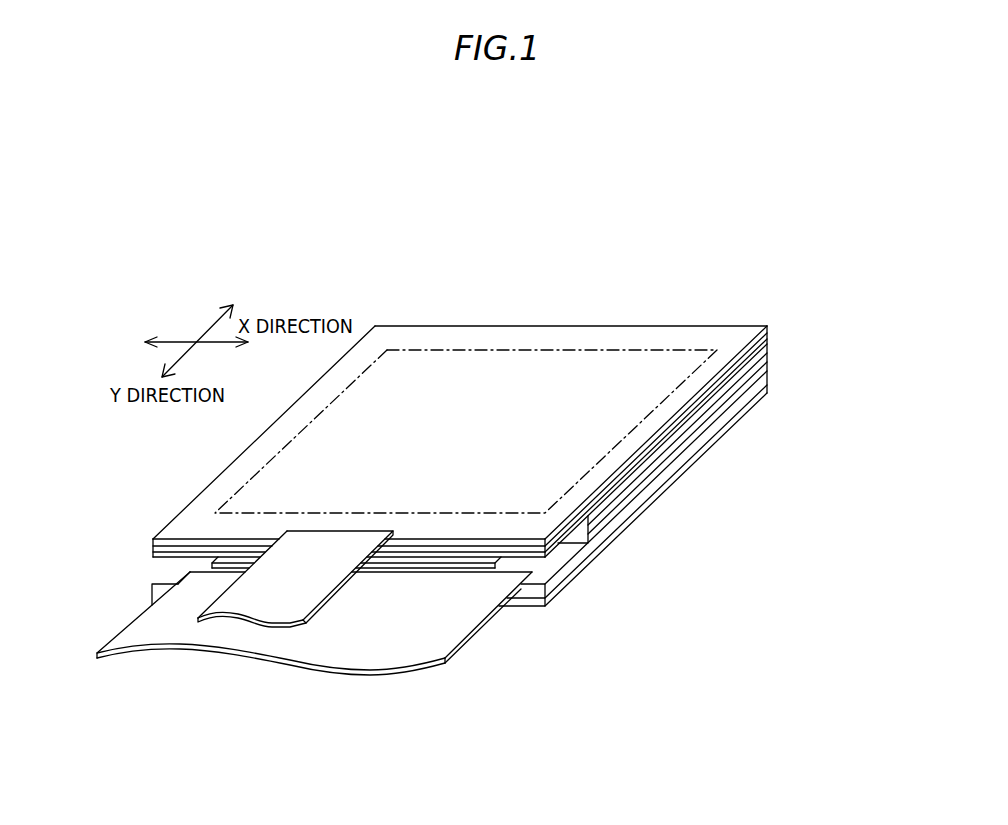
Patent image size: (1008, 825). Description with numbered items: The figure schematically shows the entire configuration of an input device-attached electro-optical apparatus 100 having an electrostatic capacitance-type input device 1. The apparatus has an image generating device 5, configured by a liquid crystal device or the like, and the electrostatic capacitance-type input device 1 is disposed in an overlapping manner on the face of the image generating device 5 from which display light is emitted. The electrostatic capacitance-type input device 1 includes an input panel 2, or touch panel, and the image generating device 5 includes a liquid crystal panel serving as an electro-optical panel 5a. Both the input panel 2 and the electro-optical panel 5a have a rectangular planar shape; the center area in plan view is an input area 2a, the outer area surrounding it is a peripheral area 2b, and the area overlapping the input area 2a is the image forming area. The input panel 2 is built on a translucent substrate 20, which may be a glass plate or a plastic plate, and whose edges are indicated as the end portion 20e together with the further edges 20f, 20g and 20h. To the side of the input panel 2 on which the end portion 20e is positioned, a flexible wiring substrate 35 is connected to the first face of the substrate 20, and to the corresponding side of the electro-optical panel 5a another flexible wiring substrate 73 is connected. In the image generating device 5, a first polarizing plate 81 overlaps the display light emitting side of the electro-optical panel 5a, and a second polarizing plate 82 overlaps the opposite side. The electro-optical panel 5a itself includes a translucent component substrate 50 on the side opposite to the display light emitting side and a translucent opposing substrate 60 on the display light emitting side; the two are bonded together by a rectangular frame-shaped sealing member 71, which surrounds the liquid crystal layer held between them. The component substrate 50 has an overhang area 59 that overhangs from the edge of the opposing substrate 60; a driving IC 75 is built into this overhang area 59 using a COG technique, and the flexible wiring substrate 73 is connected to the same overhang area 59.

The input device-attached electro-optical apparatus 100 is at (304, 280).
The electrostatic capacitance-type input device 1 is at (462, 296).
The input panel 2 is at (731, 316).
The input area 2a is at (500, 344).
The peripheral area 2b is at (572, 327).
The substrate 20 is at (692, 402).
The end portion 20e is at (450, 547).
The right edge of laminate 20f is at (627, 460).
The rear edge of laminate 20g is at (412, 321).
The left edge of laminate 20h is at (227, 467).
The image generating device 5 is at (866, 467).
The electro-optical panel 5a is at (826, 420).
The first polarizing plate 81 is at (752, 360).
The opposing substrate 60 is at (738, 382).
The sealing member 71 is at (732, 400).
The component substrate 50 is at (733, 420).
The second polarizing plate 82 is at (715, 443).
The overhang area 59 is at (562, 558).
The driving IC 75 is at (467, 567).
The flexible wiring substrate 73 is at (248, 632).
The flexible wiring substrate 35 is at (332, 553).